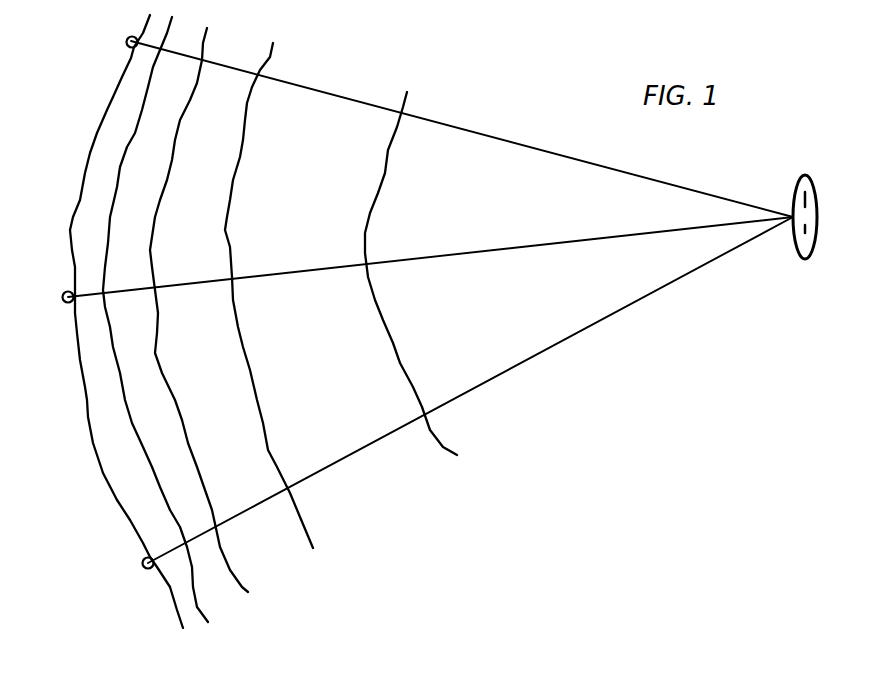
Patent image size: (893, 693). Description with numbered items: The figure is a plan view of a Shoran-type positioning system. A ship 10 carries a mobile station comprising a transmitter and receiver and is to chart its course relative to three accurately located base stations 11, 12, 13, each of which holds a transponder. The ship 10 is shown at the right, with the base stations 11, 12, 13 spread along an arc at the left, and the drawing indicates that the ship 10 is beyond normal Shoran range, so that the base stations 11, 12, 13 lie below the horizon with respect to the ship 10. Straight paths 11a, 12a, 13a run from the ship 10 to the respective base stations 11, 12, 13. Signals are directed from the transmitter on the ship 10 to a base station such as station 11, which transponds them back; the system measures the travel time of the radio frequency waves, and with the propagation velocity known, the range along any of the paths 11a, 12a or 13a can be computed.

The ship 10 is at (817, 220).
The base station 11 is at (126, 42).
The base station 12 is at (62, 297).
The base station 13 is at (142, 566).
The path 11a is at (508, 141).
The path 12a is at (545, 243).
The path 13a is at (513, 368).